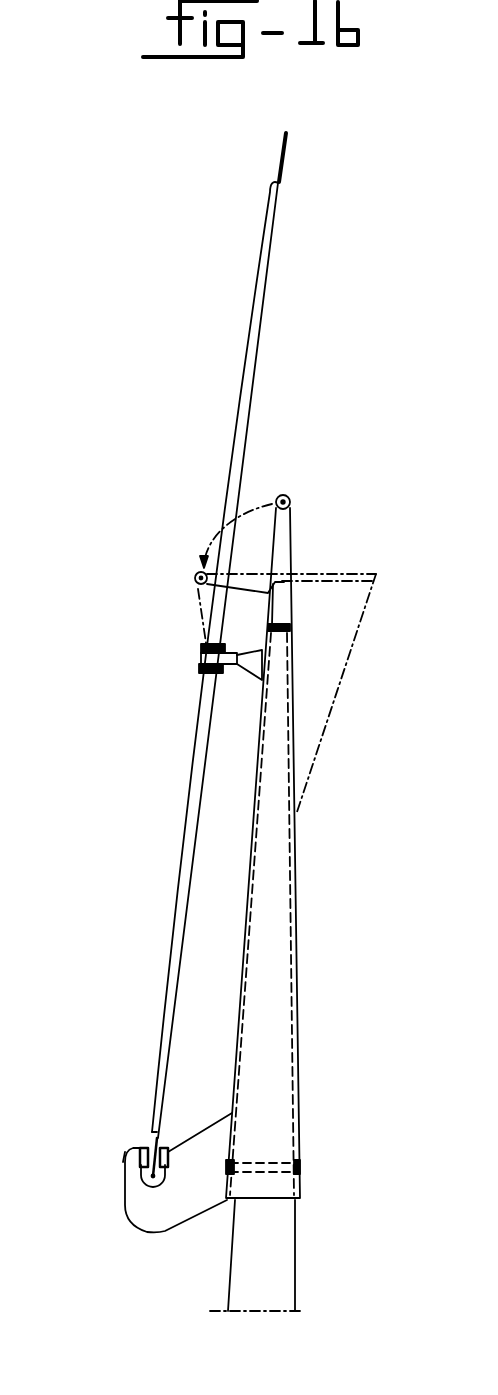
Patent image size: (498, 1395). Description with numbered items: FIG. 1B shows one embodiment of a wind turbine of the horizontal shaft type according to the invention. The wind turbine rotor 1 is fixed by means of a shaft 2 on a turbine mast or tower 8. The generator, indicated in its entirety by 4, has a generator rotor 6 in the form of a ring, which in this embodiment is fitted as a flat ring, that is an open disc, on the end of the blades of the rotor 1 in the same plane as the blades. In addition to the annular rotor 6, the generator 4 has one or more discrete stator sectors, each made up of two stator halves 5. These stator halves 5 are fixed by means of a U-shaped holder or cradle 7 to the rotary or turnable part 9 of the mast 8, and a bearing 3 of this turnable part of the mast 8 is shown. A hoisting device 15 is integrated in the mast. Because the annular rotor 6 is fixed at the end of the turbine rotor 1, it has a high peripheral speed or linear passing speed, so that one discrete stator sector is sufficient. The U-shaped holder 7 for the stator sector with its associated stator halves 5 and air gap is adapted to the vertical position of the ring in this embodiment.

The wind turbine rotor 1 is at (250, 344).
The shaft 2 is at (199, 659).
The bearing 3 is at (292, 627).
The generator 4 is at (110, 1161).
The stator halves 5 is at (138, 1153).
The generator rotor 6 is at (138, 1176).
The U-shaped holder 7 is at (167, 1213).
The turbine mast 8 is at (277, 1271).
The turnable part of the mast 9 is at (277, 892).
The hoisting device 15 is at (350, 572).